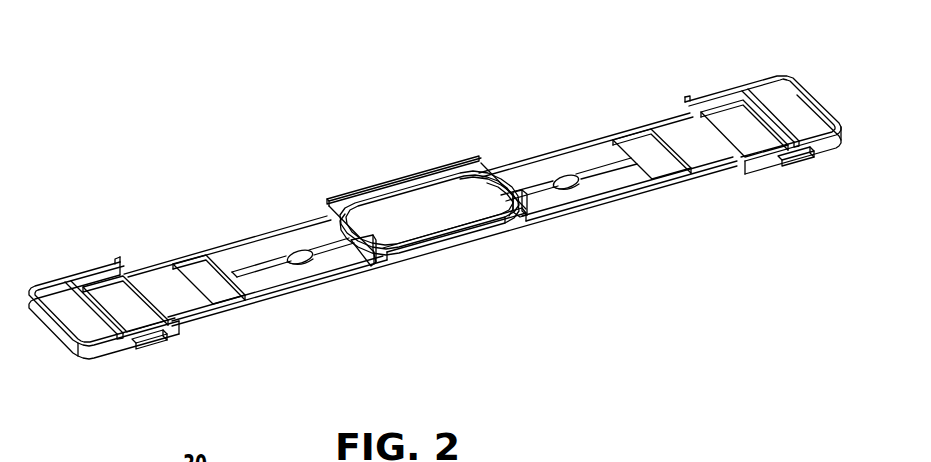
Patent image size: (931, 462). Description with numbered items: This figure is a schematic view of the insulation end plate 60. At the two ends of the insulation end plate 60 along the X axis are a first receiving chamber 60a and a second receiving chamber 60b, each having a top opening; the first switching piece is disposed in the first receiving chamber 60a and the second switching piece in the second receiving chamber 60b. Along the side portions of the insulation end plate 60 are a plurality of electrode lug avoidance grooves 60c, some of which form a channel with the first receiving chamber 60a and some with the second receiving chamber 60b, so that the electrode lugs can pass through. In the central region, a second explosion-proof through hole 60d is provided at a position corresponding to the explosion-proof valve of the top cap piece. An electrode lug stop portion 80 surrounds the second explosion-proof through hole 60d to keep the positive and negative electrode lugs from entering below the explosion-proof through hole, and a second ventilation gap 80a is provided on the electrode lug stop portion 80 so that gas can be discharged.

The insulation end plate 60 is at (326, 112).
The first receiving chamber 60a is at (90, 292).
The second receiving chamber 60b is at (768, 97).
The electrode lug avoidance grooves 60c is at (315, 290).
The second explosion-proof through hole 60d is at (443, 216).
The electrode lug stop portion 80 is at (371, 248).
The second ventilation gap 80a is at (520, 200).